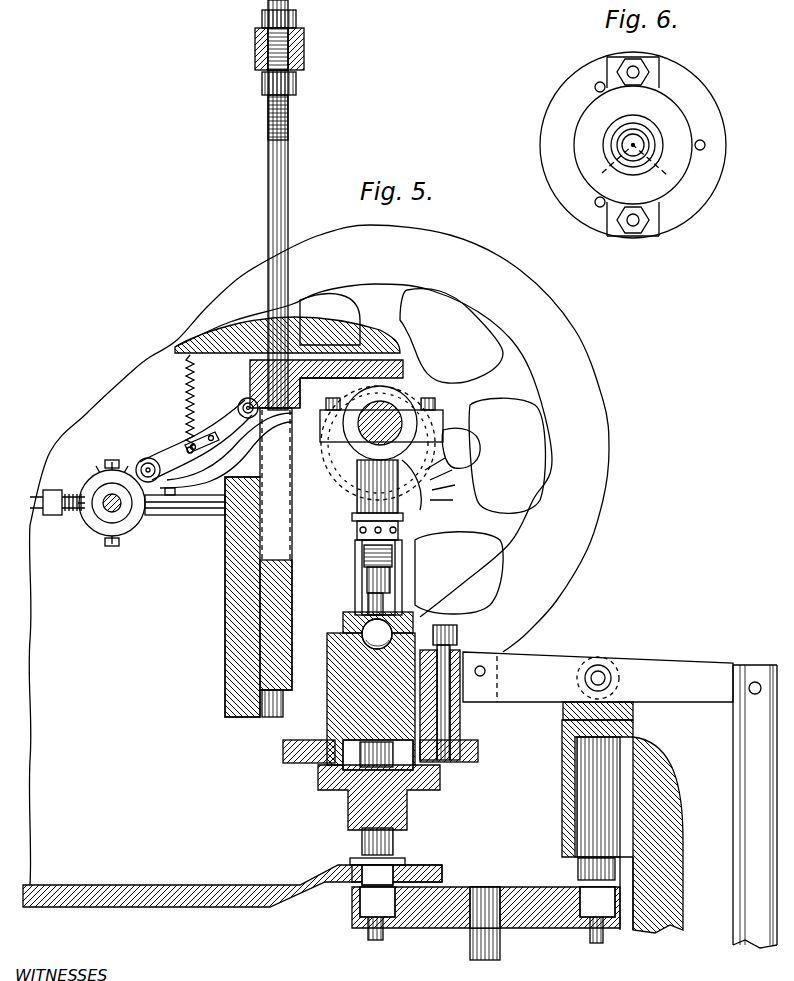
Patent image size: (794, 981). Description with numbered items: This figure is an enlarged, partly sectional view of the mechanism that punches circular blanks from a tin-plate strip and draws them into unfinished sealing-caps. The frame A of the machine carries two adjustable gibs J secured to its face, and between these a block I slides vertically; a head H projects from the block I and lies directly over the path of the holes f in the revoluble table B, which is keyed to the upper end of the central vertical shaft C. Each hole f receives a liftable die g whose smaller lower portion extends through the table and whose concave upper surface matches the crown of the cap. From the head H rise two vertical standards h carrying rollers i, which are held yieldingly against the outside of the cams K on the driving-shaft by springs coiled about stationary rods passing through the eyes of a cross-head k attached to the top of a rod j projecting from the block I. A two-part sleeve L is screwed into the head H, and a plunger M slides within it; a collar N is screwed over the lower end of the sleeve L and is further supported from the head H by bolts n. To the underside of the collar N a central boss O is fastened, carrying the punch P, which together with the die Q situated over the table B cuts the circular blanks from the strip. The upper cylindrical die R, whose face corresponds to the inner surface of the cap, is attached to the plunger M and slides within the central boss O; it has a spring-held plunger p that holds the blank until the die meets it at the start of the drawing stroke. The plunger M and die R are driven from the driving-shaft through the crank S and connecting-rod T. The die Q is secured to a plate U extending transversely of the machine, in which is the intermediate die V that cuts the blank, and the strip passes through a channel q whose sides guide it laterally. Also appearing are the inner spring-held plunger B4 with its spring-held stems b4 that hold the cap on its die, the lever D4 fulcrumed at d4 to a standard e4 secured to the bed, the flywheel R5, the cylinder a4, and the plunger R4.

In FIG. 5, the frame A is at (232, 612).
In FIG. 5, the revoluble table B is at (530, 928).
In FIG. 5, the central vertical shaft C is at (478, 960).
In FIG. 5, the head H is at (460, 700).
In FIG. 5, the block I is at (292, 606).
In FIG. 5, the adjustable gibs J is at (268, 717).
In FIG. 5, the cams K is at (440, 492).
In FIG. 5, the sleeve L is at (326, 704).
In FIG. 5, the plunger M is at (312, 782).
In FIG. 6, the collar N is at (705, 215).
In FIG. 5, the collar N is at (478, 750).
In FIG. 6, the central boss O is at (660, 75).
In FIG. 5, the central boss O is at (407, 805).
In FIG. 6, the punch P is at (575, 180).
In FIG. 5, the punch P is at (395, 850).
In FIG. 5, the die Q is at (405, 862).
In FIG. 5, the upper cylindrical die R is at (350, 860).
In FIG. 5, the crank S is at (410, 392).
In FIG. 5, the connecting-rod T is at (374, 457).
In FIG. 5, the plate U is at (442, 873).
In FIG. 5, the intermediate die V is at (345, 882).
In FIG. 5, the holes f is at (575, 868).
In FIG. 5, the liftable die g is at (395, 928).
In FIG. 5, the vertical standards h is at (402, 600).
In FIG. 5, the rollers i is at (415, 538).
In FIG. 5, the rod j is at (290, 160).
In FIG. 5, the cross-head k is at (304, 48).
In FIG. 6, the bolts n is at (596, 83).
In FIG. 5, the bolts n is at (452, 730).
In FIG. 5, the spring-held plunger p is at (405, 855).
In FIG. 5, the channel q is at (345, 858).
In FIG. 5, the flywheel R5 is at (608, 458).
In FIG. 5, the lever D4 is at (598, 677).
In FIG. 5, the fulcrum d4 is at (755, 665).
In FIG. 5, the cylinder a4 is at (636, 738).
In FIG. 5, the plunger R4 is at (620, 770).
In FIG. 5, the standard e4 is at (675, 835).
In FIG. 5, the spring-held stems b4 is at (633, 877).
In FIG. 5, the inner spring-held plunger B4 is at (576, 862).